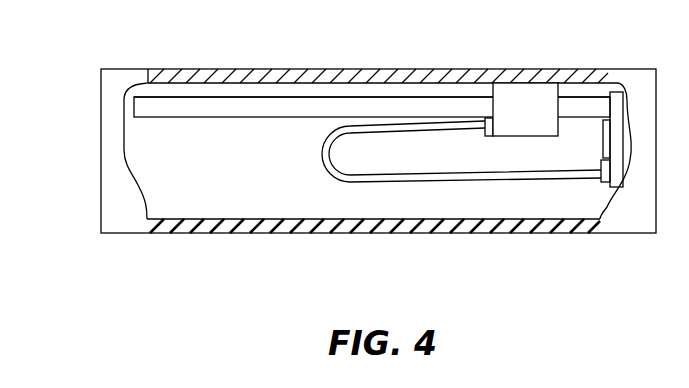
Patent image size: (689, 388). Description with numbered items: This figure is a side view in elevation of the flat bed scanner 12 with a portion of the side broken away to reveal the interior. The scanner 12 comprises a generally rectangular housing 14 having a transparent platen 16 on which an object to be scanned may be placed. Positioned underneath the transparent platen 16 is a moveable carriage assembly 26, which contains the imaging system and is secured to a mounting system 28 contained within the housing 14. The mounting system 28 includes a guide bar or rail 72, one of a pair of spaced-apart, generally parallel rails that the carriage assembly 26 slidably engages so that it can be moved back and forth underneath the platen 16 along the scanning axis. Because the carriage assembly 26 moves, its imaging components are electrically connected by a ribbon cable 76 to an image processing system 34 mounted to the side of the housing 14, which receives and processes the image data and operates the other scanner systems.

The flat bed scanner 12 is at (101, 152).
The housing 14 is at (101, 190).
The transparent platen 16 is at (196, 69).
The moveable carriage assembly 26 is at (529, 83).
The mounting system 28 is at (240, 97).
The image processing system 34 is at (590, 143).
The guide bar or rail 72 is at (184, 118).
The ribbon cable 76 is at (318, 153).